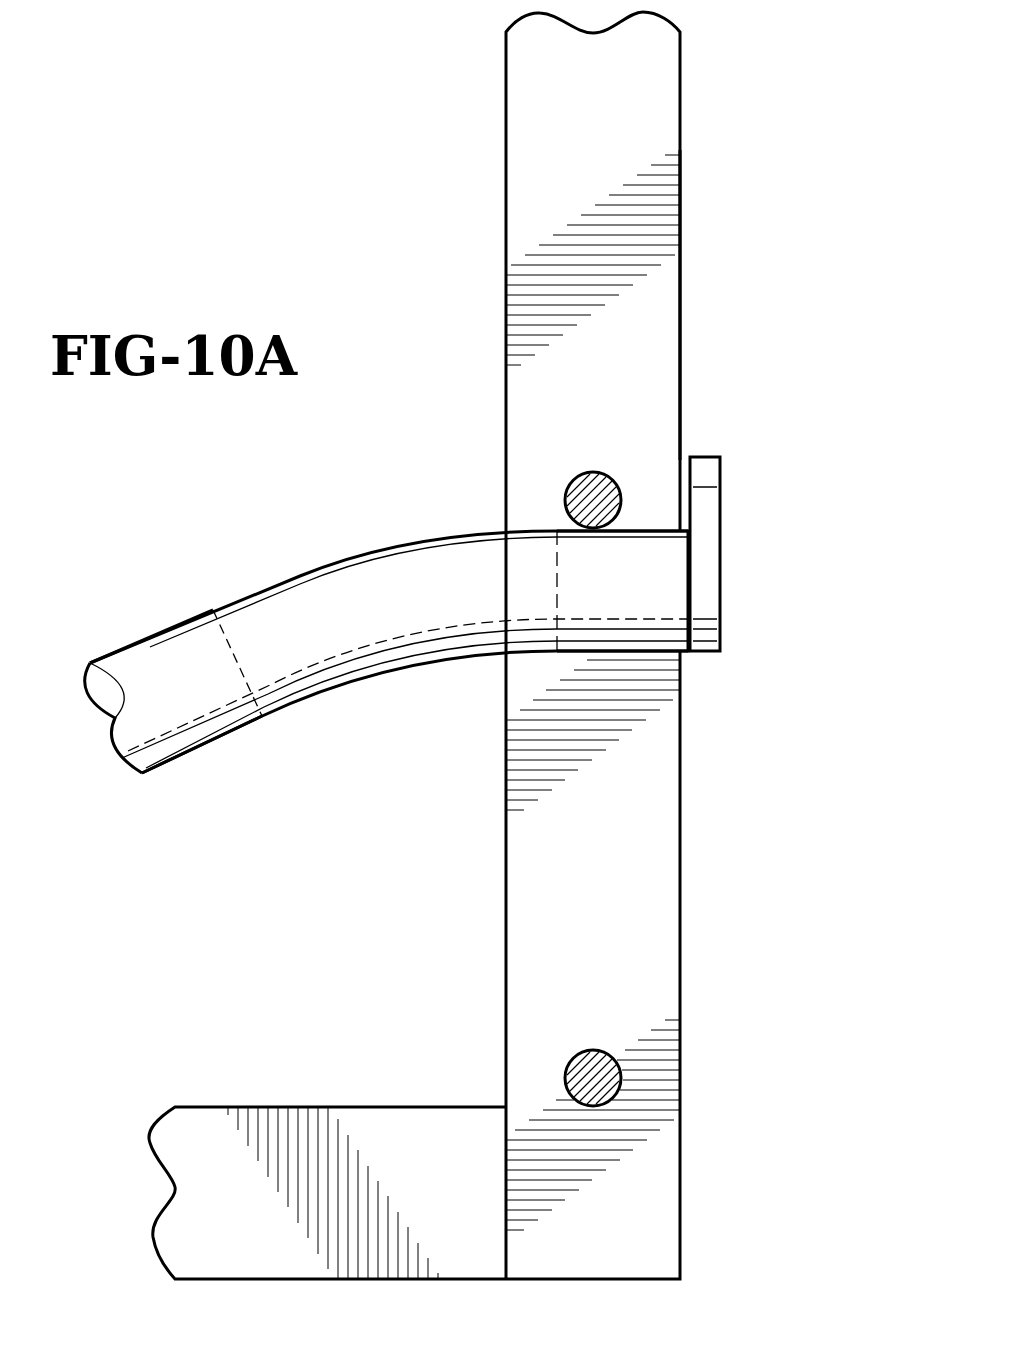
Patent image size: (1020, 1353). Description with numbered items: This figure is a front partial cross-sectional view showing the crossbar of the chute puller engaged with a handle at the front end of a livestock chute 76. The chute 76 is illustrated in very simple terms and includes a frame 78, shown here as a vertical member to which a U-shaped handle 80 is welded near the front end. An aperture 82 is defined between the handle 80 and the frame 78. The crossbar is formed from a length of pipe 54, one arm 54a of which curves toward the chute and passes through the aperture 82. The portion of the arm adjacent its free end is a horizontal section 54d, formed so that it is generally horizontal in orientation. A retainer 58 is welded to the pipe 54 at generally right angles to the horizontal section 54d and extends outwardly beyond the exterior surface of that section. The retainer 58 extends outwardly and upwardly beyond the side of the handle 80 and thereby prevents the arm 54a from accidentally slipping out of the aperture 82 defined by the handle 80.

The pipe 54 is at (386, 636).
The arm 54a is at (168, 652).
The horizontal section 54d is at (637, 540).
The retainer 58 is at (710, 512).
The livestock chute 76 is at (706, 96).
The frame 78 is at (697, 300).
The U-shaped handle 80 is at (585, 485).
The aperture 82 is at (592, 867).